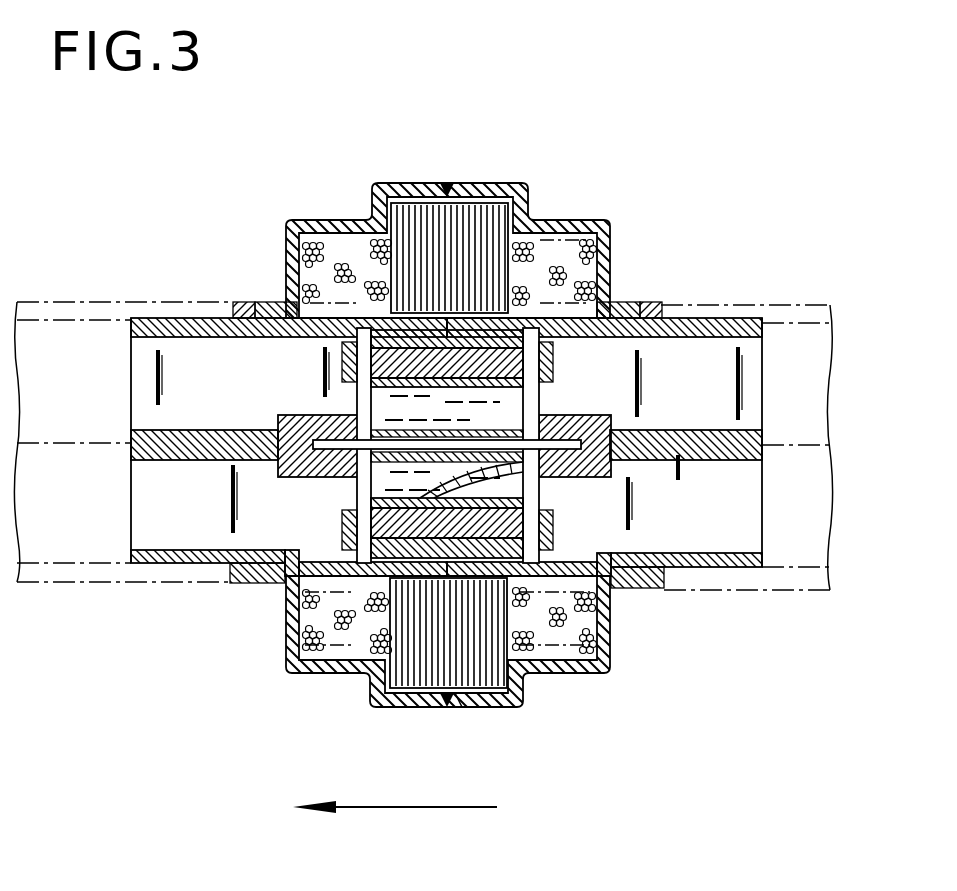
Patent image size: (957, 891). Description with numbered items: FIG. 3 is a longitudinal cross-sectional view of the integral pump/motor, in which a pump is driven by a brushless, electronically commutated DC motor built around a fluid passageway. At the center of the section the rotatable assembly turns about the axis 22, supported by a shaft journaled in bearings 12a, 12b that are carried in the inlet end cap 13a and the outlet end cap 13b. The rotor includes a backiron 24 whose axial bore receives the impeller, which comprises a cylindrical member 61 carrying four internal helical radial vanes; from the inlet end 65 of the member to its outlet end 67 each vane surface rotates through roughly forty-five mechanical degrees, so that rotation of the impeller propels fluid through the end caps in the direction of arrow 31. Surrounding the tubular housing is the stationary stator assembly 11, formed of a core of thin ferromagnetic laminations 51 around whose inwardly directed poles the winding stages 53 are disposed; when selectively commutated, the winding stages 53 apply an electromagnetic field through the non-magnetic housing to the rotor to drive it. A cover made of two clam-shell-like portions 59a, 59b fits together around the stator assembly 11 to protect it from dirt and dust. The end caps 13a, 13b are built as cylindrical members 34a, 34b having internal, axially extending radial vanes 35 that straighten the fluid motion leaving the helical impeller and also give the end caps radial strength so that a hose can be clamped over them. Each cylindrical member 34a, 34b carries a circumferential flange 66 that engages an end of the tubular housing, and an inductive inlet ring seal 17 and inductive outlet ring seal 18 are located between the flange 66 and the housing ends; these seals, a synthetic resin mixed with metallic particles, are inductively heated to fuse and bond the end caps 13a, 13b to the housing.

The stator assembly 11 is at (522, 198).
The bearing 12a is at (323, 418).
The bearing 12b is at (568, 418).
The inlet end cap 13a is at (233, 303).
The outlet end cap 13b is at (604, 414).
The inlet ring seal 17 is at (651, 310).
The outlet ring seal 18 is at (258, 306).
The axis 22 is at (98, 445).
The backiron 24 is at (517, 368).
The arrow 31 is at (398, 808).
The cylindrical member 34a is at (173, 565).
The cylindrical member 34b is at (730, 588).
The radial vanes 35 is at (203, 400).
The laminations 51 is at (468, 210).
The winding stages 53 is at (323, 245).
The cover 59a is at (470, 710).
The cover 59b is at (423, 710).
The cylindrical member 61 is at (345, 388).
The inlet end 65 is at (525, 460).
The circumferential flange 66 is at (278, 300).
The outlet end 67 is at (370, 504).